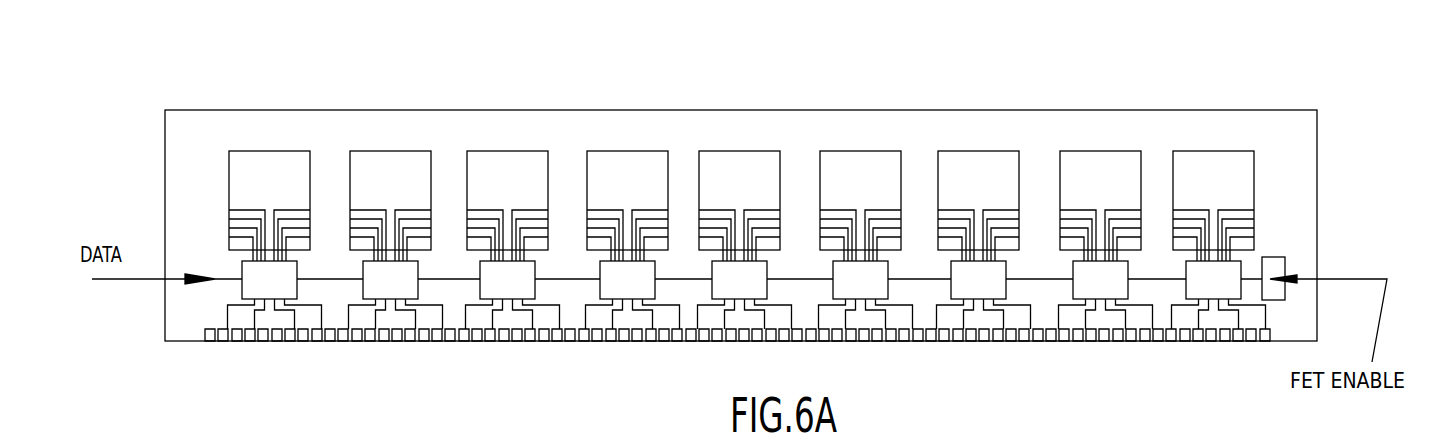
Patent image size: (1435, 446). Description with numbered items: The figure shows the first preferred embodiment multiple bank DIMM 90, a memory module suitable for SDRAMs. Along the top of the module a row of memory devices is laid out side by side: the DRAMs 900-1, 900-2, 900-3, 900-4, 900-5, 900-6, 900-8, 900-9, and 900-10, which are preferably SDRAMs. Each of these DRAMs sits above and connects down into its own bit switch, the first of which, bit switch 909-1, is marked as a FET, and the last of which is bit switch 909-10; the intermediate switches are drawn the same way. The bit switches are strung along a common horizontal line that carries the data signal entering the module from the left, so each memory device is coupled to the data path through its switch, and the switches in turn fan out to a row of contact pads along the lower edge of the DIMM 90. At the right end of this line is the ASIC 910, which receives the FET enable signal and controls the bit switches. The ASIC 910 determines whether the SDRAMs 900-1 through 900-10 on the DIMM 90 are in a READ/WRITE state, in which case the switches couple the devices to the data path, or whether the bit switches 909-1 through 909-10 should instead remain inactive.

The DIMM 90 is at (1317, 120).
The ASIC 910 is at (1302, 240).
The DRAM 900-1 is at (272, 151).
The DRAM 900-2 is at (393, 151).
The DRAM 900-3 is at (510, 151).
The DRAM 900-4 is at (633, 151).
The DRAM 900-5 is at (742, 151).
The DRAM 900-6 is at (863, 151).
The DRAM 900-8 is at (981, 151).
The DRAM 900-9 is at (1103, 151).
The DRAM 900-10 is at (1216, 151).
The bit switch 909-1 is at (242, 287).
The bit switch 909-10 is at (1186, 289).